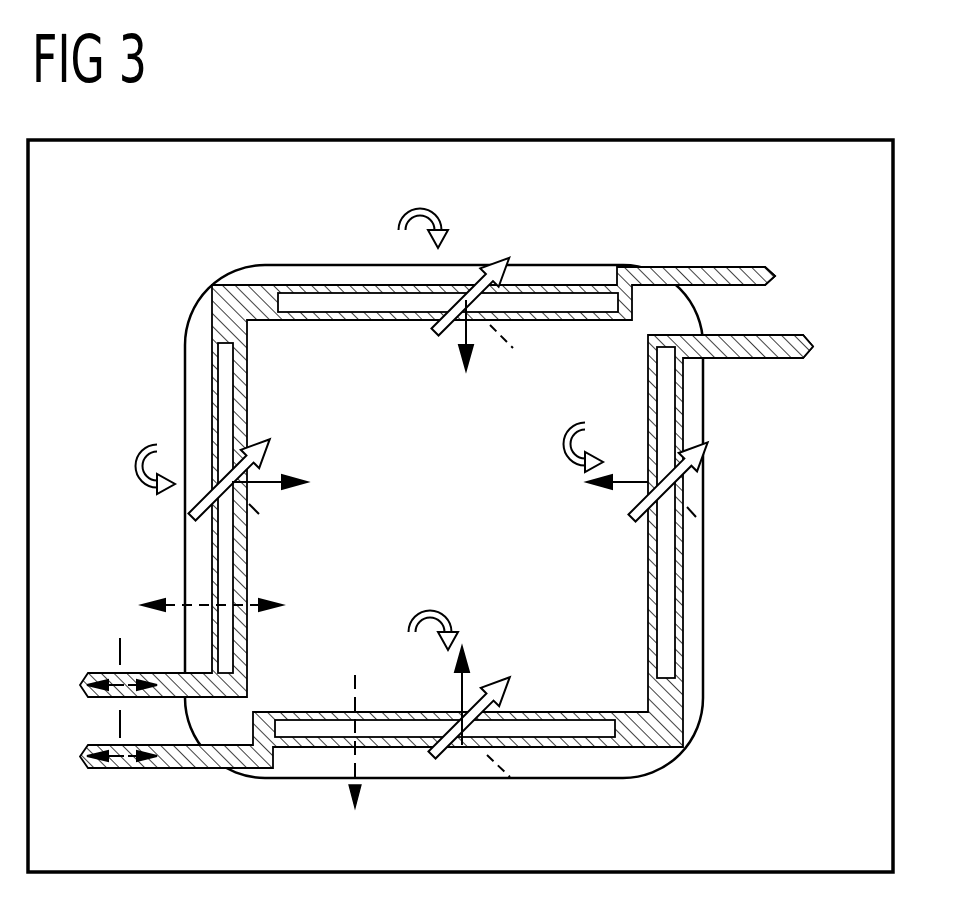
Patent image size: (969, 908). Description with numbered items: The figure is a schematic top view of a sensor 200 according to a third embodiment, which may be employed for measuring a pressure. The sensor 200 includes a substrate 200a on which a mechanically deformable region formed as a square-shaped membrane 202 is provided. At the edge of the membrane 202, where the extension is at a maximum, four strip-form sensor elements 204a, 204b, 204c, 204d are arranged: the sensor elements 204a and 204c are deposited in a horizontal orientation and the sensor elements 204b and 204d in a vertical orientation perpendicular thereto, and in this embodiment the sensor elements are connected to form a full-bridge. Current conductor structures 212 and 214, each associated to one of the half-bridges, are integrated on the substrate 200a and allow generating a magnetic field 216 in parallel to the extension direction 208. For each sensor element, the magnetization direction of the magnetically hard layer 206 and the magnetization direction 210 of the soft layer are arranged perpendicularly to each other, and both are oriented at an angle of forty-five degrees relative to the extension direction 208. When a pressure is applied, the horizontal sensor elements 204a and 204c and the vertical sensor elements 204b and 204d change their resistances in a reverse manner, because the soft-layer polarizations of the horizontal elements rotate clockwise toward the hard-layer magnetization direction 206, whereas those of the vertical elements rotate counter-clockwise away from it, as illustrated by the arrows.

The sensor 200 is at (147, 562).
The substrate 200a is at (757, 140).
The membrane 202 is at (570, 345).
The sensor element 204a is at (305, 302).
The sensor element 204b is at (232, 425).
The sensor element 204c is at (578, 728).
The sensor element 204d is at (660, 640).
The magnetization direction of the magnetically hard layer 206 is at (510, 257).
The extension direction 208 is at (463, 338).
The magnetization direction of the soft layer 210 is at (442, 274).
The current conductor structure 212 is at (686, 268).
The current conductor structure 214 is at (798, 334).
The magnetic field 216 is at (374, 802).